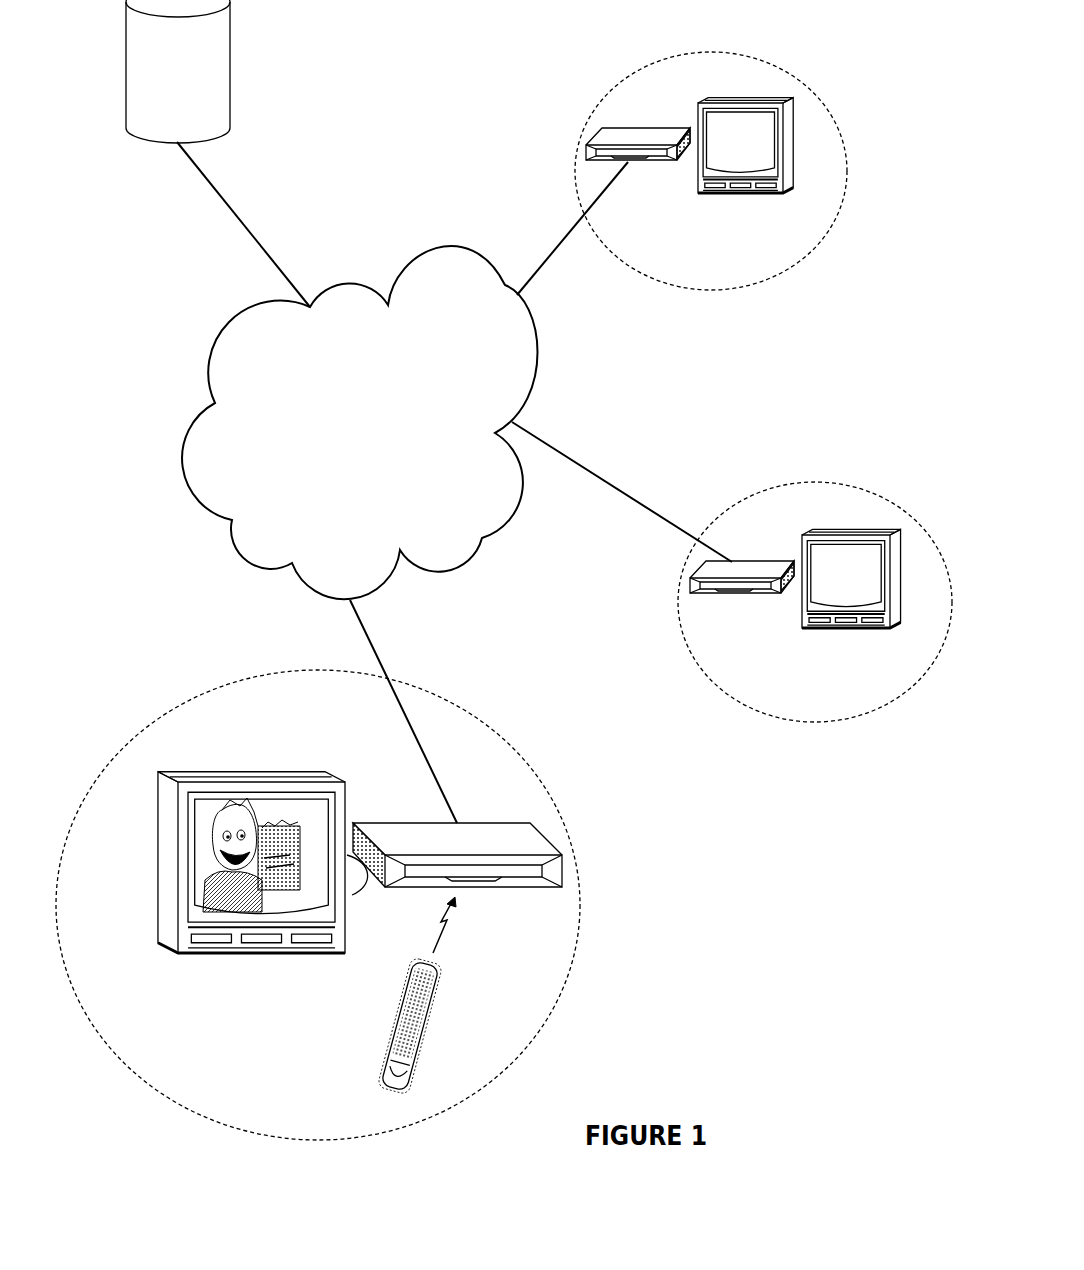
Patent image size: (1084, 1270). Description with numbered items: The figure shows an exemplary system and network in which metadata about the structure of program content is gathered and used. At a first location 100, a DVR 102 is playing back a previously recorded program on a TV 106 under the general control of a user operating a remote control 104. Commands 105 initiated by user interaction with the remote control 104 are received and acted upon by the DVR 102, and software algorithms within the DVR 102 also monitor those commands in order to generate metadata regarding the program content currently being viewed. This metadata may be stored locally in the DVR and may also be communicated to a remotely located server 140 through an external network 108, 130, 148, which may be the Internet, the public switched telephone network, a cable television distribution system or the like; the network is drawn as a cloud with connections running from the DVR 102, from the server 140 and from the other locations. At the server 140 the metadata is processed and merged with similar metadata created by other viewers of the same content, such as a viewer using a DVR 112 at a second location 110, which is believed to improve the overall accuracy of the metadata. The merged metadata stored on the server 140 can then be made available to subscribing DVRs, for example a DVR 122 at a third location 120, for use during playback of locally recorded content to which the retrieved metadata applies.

The location 100 is at (590, 905).
The DVR 102 is at (485, 827).
The remote control 104 is at (392, 1020).
The commands 105 is at (457, 930).
The TV 106 is at (228, 773).
The external network 108 is at (393, 656).
The location 110 is at (710, 290).
The DVR 112 is at (635, 130).
The location 120 is at (812, 723).
The DVR 122 is at (758, 562).
The external network 130 is at (217, 327).
The server 140 is at (231, 73).
The external network 148 is at (234, 212).